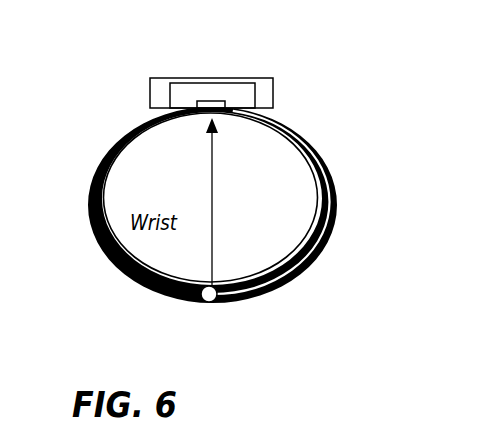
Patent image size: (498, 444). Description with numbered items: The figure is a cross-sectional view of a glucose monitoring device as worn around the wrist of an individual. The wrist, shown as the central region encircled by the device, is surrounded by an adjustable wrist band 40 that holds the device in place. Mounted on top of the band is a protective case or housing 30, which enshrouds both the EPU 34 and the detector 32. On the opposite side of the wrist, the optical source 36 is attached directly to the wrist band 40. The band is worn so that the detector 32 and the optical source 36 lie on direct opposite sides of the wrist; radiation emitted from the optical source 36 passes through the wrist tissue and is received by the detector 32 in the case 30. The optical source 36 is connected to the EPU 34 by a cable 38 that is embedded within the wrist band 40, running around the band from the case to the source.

The protective case 30 is at (205, 77).
The detector 32 is at (197, 102).
The EPU 34 is at (240, 97).
The optical source 36 is at (211, 302).
The cable 38 is at (325, 165).
The wrist band 40 is at (88, 213).